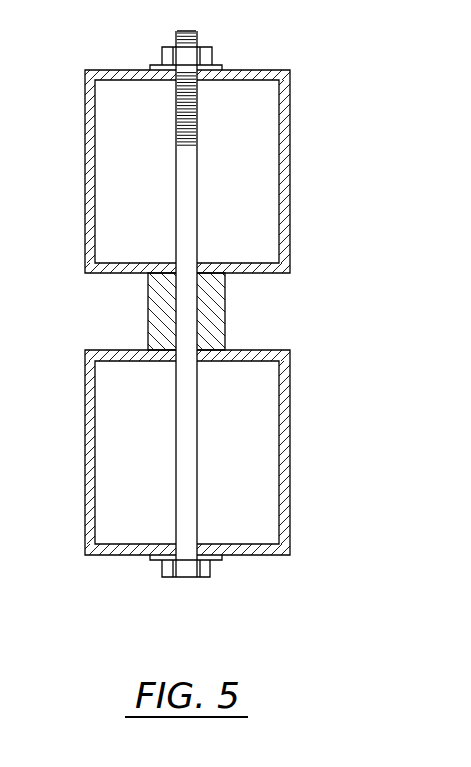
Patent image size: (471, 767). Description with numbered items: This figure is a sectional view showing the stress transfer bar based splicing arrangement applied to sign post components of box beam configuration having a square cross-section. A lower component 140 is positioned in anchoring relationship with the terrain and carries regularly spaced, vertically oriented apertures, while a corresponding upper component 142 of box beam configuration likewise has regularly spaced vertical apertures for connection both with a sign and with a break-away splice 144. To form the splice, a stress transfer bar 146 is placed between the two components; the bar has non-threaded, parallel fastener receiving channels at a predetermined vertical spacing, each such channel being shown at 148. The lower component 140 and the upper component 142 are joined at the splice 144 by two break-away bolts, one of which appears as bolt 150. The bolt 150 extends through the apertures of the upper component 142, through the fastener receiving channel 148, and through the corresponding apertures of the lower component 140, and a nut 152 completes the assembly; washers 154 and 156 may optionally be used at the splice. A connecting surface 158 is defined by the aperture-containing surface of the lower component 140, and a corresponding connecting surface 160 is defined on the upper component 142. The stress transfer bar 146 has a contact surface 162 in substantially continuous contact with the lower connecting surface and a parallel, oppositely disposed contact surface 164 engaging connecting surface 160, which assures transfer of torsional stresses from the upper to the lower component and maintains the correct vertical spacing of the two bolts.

The lower component 140 is at (290, 159).
The upper component 142 is at (290, 448).
The break-away splice 144 is at (117, 330).
The stress transfer bar 146 is at (148, 298).
The fastener receiving channel 148 is at (200, 310).
The break-away bolt 150 is at (205, 578).
The nut 152 is at (214, 48).
The washer 154 is at (160, 578).
The washer 156 is at (152, 64).
The connecting surface 158 is at (279, 274).
The connecting surface 160 is at (265, 350).
The contact surface 162 is at (158, 264).
The contact surface 164 is at (158, 362).